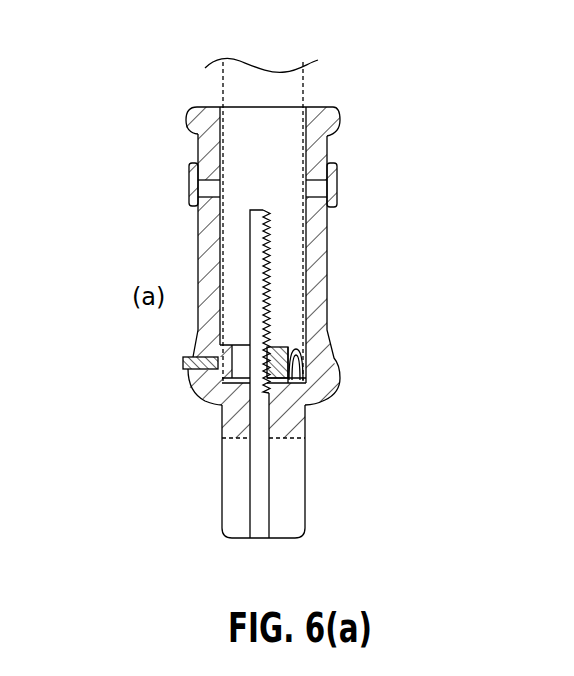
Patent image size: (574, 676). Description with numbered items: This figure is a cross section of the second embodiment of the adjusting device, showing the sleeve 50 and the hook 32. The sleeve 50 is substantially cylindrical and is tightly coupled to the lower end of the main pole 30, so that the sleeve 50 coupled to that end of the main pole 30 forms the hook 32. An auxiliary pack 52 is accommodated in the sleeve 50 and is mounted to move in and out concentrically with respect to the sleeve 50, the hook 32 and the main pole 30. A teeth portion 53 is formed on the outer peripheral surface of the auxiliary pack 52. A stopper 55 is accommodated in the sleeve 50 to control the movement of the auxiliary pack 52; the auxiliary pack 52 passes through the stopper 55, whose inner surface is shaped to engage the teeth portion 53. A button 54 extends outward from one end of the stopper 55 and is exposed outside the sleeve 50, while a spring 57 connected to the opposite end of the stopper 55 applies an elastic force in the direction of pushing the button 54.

The main pole 30 is at (304, 86).
The hook 32 is at (305, 486).
The sleeve 50 is at (198, 232).
The auxiliary pack 52 is at (250, 210).
The teeth portion 53 is at (272, 248).
The button 54 is at (184, 362).
The stopper 55 is at (284, 347).
The spring 57 is at (303, 360).